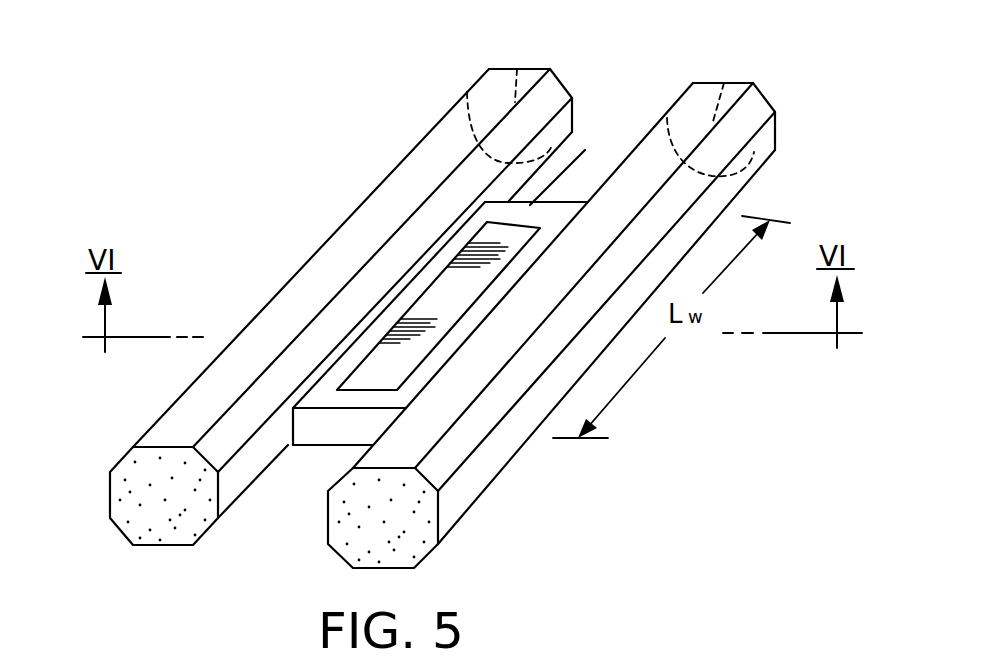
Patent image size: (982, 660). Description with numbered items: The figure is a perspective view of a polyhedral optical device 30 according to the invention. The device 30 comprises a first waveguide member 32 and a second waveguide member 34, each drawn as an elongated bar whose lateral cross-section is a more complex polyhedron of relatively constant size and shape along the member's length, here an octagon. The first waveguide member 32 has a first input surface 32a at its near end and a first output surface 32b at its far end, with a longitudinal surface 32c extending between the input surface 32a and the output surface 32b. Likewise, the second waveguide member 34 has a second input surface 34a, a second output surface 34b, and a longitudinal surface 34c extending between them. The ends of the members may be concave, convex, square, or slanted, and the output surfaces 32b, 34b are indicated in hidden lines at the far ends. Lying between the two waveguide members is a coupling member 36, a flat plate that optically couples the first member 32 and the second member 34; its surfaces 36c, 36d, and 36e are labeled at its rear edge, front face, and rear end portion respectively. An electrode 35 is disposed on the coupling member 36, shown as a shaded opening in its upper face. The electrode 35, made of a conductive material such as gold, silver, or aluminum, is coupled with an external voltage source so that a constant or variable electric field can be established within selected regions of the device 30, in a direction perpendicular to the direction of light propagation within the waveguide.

The optical device 30 is at (236, 300).
The first waveguide member 32 is at (410, 150).
The first input surface 32a is at (110, 523).
The first output surface 32b is at (518, 69).
The longitudinal surface of first waveguide member 32c is at (372, 214).
The second waveguide member 34 is at (522, 448).
The second input surface 34a is at (426, 536).
The second output surface 34b is at (733, 80).
The longitudinal surface of second waveguide member 34c is at (640, 192).
The electrode 35 is at (430, 340).
The coupling member 36 is at (384, 301).
The coupling member surface 36c is at (560, 215).
The coupling member surface 36d is at (332, 430).
The coupling member surface 36e is at (549, 153).